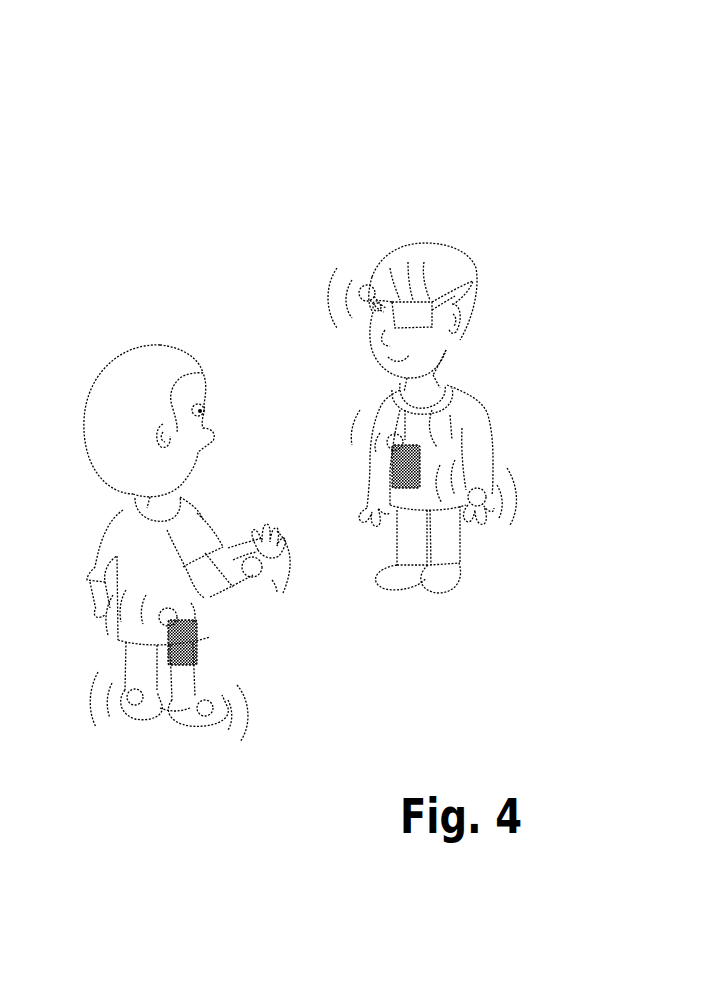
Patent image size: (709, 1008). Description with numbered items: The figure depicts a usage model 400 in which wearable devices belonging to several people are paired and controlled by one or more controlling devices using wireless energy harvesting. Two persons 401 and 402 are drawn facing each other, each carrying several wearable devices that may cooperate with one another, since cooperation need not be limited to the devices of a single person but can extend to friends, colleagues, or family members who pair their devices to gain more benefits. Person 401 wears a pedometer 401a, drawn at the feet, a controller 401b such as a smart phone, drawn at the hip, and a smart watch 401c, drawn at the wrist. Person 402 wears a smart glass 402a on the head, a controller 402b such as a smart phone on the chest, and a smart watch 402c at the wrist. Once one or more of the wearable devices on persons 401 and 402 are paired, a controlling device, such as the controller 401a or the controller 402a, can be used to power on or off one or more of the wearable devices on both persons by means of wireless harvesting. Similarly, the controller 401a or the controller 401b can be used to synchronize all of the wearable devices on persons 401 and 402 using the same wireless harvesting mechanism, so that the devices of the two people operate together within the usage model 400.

The usage model 400 is at (386, 125).
The person 401 is at (153, 357).
The pedometer 401a is at (266, 713).
The controller 401b is at (250, 647).
The smart watch 401c is at (288, 570).
The person 402 is at (436, 252).
The smart glass 402a is at (518, 299).
The controller 402b is at (451, 448).
The smart watch 402c is at (521, 493).